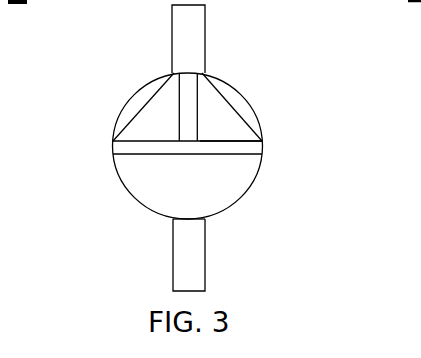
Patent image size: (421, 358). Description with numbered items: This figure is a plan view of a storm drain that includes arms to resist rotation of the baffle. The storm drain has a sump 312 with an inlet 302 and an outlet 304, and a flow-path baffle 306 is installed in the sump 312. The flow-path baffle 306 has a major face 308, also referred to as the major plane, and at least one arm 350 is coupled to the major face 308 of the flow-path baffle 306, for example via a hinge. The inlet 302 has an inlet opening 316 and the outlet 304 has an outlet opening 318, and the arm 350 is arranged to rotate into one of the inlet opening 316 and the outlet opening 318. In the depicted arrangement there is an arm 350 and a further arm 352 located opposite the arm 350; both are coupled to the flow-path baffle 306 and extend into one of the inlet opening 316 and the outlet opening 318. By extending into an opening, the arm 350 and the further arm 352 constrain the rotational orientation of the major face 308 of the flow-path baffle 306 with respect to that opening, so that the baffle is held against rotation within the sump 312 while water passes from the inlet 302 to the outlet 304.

The inlet 302 is at (205, 265).
The outlet 304 is at (172, 20).
The flow-path baffle 306 is at (113, 147).
The major face 308 is at (229, 140).
The sump 312 is at (128, 195).
The inlet opening 316 is at (188, 220).
The outlet opening 318 is at (188, 72).
The arm 350 is at (142, 97).
The further arm 352 is at (228, 105).